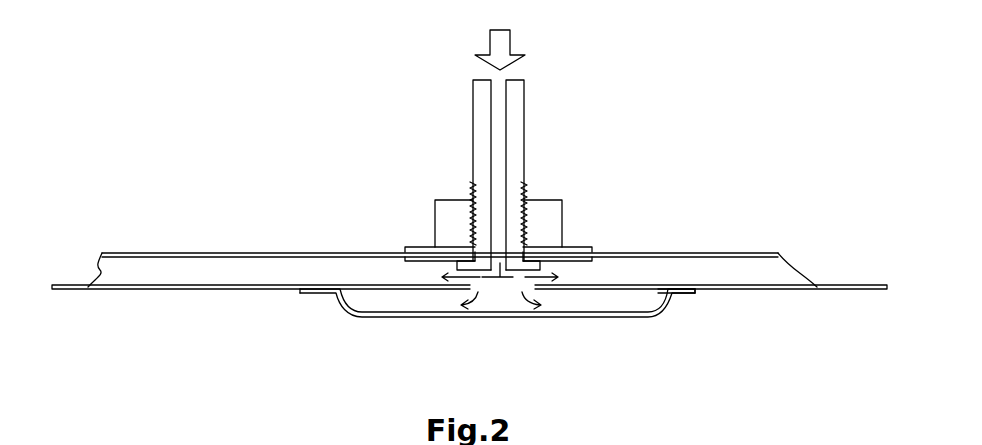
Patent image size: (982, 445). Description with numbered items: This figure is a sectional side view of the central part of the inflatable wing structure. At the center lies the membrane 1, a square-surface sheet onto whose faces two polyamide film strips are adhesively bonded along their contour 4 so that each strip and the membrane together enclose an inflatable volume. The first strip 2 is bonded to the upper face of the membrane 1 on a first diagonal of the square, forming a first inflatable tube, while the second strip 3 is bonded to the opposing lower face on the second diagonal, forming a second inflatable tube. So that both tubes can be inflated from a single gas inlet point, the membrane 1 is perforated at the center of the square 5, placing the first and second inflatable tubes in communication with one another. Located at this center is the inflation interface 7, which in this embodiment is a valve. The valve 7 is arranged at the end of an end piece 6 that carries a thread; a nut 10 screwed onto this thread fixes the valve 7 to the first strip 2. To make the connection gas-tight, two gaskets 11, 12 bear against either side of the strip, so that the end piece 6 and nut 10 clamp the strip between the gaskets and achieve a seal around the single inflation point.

The membrane 1 is at (796, 281).
The first strip 2 is at (288, 235).
The second strip 3 is at (332, 303).
The contour 4 is at (673, 303).
The center of the square 5 is at (497, 300).
The end piece 6 is at (517, 130).
The inflation interface 7 is at (492, 255).
The nut 10 is at (545, 207).
The gasket 11 is at (413, 247).
The gasket 12 is at (572, 263).